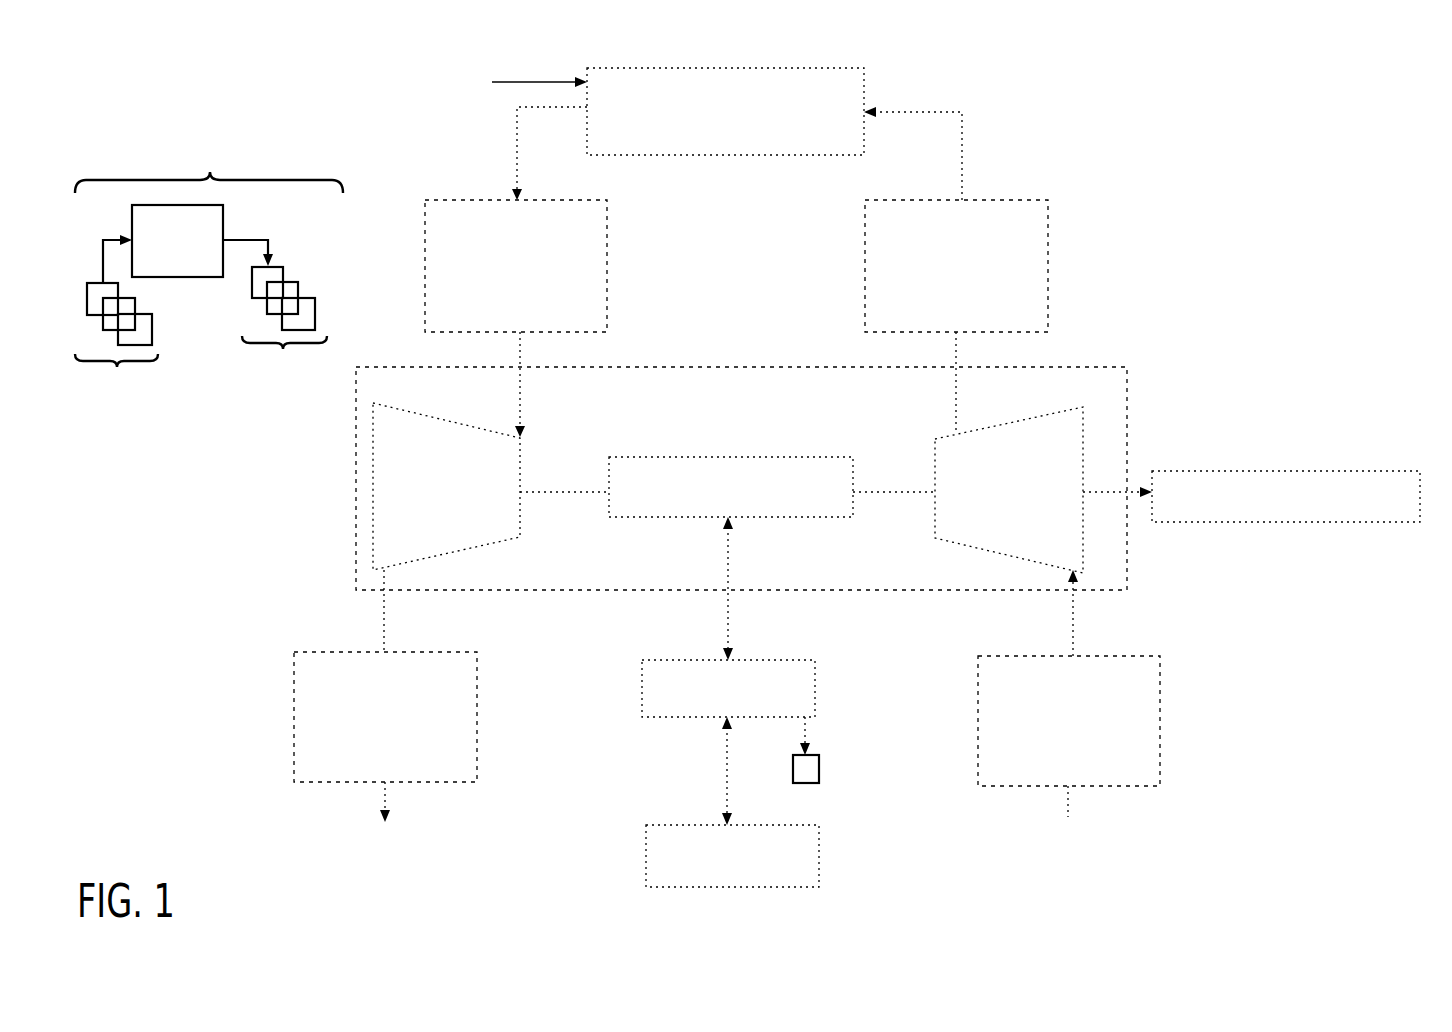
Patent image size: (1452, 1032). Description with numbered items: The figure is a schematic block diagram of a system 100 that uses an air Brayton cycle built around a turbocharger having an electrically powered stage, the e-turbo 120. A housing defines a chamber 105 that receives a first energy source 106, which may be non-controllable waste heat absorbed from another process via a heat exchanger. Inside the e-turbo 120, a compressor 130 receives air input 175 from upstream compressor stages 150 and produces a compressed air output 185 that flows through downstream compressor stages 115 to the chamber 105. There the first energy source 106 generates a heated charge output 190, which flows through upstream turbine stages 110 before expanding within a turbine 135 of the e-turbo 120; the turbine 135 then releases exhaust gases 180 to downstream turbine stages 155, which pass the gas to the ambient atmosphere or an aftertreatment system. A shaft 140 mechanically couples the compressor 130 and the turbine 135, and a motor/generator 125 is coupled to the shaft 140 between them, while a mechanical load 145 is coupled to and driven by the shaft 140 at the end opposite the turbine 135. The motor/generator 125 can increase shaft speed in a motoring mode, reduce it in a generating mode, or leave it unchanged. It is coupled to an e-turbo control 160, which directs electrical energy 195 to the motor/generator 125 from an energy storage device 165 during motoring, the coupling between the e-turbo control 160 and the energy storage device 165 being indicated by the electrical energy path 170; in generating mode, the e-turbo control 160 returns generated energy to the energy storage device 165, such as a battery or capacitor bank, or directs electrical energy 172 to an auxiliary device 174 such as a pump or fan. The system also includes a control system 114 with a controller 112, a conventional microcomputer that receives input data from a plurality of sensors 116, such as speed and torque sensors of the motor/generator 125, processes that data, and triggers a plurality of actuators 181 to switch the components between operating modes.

The system 100 is at (1375, 72).
The chamber 105 is at (607, 68).
The first energy source 106 is at (512, 82).
The heated charge output 190 is at (517, 118).
The upstream turbine stages 110 is at (468, 200).
The compressed air output 185 is at (957, 127).
The downstream compressor stages 115 is at (1017, 200).
The e-turbo 120 is at (1100, 367).
The turbine 135 is at (425, 415).
The shaft 140 is at (530, 492).
The motor/generator 125 is at (710, 457).
The compressor 130 is at (1033, 418).
The mechanical load 145 is at (1242, 471).
The electrical energy 195 is at (728, 569).
The downstream turbine stages 155 is at (326, 652).
The exhaust gases 180 is at (389, 798).
The e-turbo control 160 is at (790, 660).
The power line 170 is at (727, 766).
The energy storage device 165 is at (738, 887).
The electrical energy 172 is at (805, 727).
The auxiliary device 174 is at (819, 770).
The upstream compressor stages 150 is at (1140, 656).
The air input 175 is at (1070, 803).
The control system 114 is at (209, 159).
The controller 112 is at (188, 244).
The sensors 116 is at (116, 347).
The actuators 181 is at (284, 330).